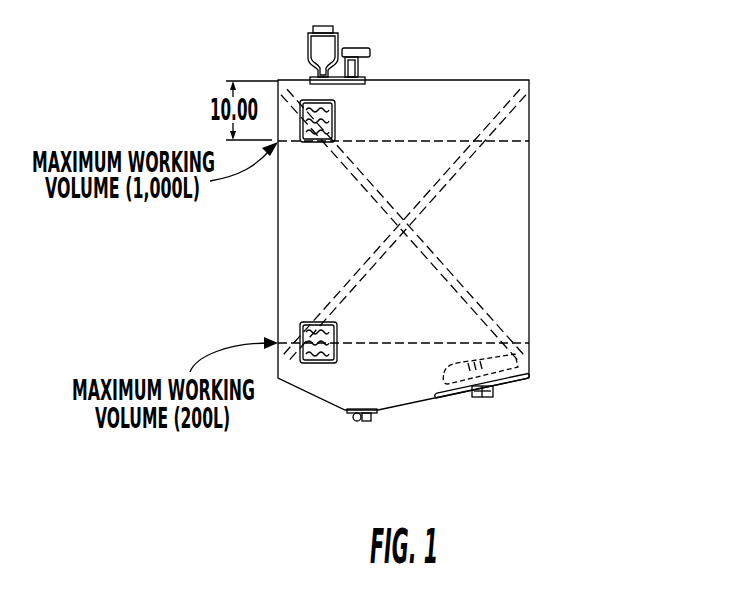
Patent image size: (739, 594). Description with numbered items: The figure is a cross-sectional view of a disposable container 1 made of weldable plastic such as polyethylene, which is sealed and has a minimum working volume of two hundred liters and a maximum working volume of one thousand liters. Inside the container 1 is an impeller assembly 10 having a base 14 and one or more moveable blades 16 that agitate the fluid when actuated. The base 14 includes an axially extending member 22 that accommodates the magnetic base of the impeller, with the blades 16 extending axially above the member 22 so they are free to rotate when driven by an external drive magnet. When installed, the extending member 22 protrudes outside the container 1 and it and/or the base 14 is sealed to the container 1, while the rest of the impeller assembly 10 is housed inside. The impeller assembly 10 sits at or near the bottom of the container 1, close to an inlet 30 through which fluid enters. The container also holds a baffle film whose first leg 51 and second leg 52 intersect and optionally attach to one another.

The container 1 is at (530, 183).
The impeller assembly 10 is at (493, 404).
The base 14 is at (454, 398).
The blades 16 is at (515, 363).
The axially extending member 22 is at (484, 398).
The inlet 30 is at (337, 421).
The first leg 51 is at (452, 182).
The second leg 52 is at (445, 258).